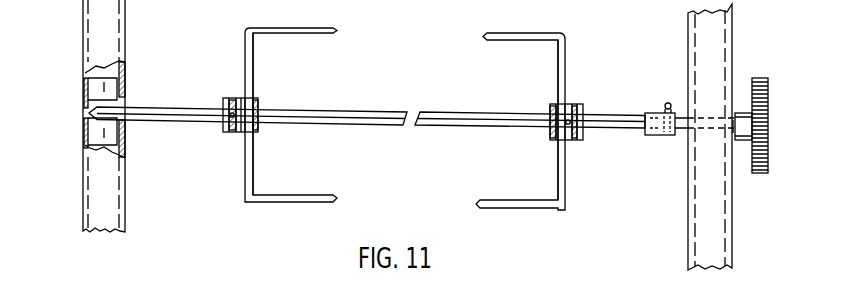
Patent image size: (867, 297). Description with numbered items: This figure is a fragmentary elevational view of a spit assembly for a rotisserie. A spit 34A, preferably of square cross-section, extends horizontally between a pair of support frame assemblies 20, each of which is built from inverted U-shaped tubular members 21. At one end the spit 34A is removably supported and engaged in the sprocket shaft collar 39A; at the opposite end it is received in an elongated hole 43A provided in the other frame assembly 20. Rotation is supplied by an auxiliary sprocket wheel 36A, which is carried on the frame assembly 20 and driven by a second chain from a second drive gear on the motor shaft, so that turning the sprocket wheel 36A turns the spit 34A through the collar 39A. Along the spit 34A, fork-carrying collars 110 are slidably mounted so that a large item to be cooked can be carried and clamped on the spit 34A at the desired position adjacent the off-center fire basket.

The support frame assembly 20 is at (80, 37).
The tubular member 21 is at (733, 37).
The elongated hole 43A is at (123, 92).
The spit 34A is at (168, 107).
The fork-carrying collar 110 is at (230, 133).
The sprocket shaft collar 39A is at (653, 140).
The auxiliary sprocket wheel 36A is at (768, 152).